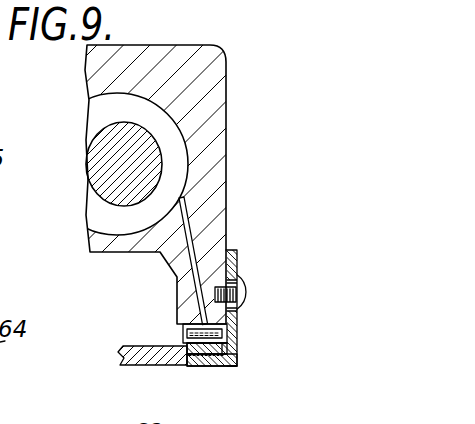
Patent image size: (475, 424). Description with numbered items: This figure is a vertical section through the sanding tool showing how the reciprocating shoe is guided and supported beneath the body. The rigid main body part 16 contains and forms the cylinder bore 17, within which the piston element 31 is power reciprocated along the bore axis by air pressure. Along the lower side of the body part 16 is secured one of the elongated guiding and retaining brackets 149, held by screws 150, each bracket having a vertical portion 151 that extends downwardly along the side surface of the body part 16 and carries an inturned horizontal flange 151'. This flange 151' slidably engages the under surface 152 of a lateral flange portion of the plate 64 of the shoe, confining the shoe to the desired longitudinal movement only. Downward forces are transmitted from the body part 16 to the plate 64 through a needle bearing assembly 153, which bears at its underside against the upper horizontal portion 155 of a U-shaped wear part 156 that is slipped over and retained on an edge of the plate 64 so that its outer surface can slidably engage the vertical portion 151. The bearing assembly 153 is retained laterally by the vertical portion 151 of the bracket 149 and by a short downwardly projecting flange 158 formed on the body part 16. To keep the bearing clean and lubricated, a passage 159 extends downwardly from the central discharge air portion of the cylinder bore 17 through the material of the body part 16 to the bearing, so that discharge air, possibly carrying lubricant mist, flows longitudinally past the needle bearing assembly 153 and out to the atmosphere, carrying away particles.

The main body part 16 is at (218, 124).
The cylinder bore 17 is at (96, 104).
The piston element 31 is at (90, 163).
The plate 64 is at (148, 345).
The guiding and retaining bracket 149 is at (236, 251).
The screws 150 is at (244, 290).
The vertical portion 151 is at (276, 298).
The inturned horizontal flange 151' is at (226, 385).
The under surface 152 is at (197, 363).
The needle bearing assembly 153 is at (233, 323).
The upper horizontal portion 155 is at (228, 349).
The U-shaped wear part 156 is at (211, 365).
The downwardly projecting flange 158 is at (182, 333).
The passage 159 is at (188, 228).